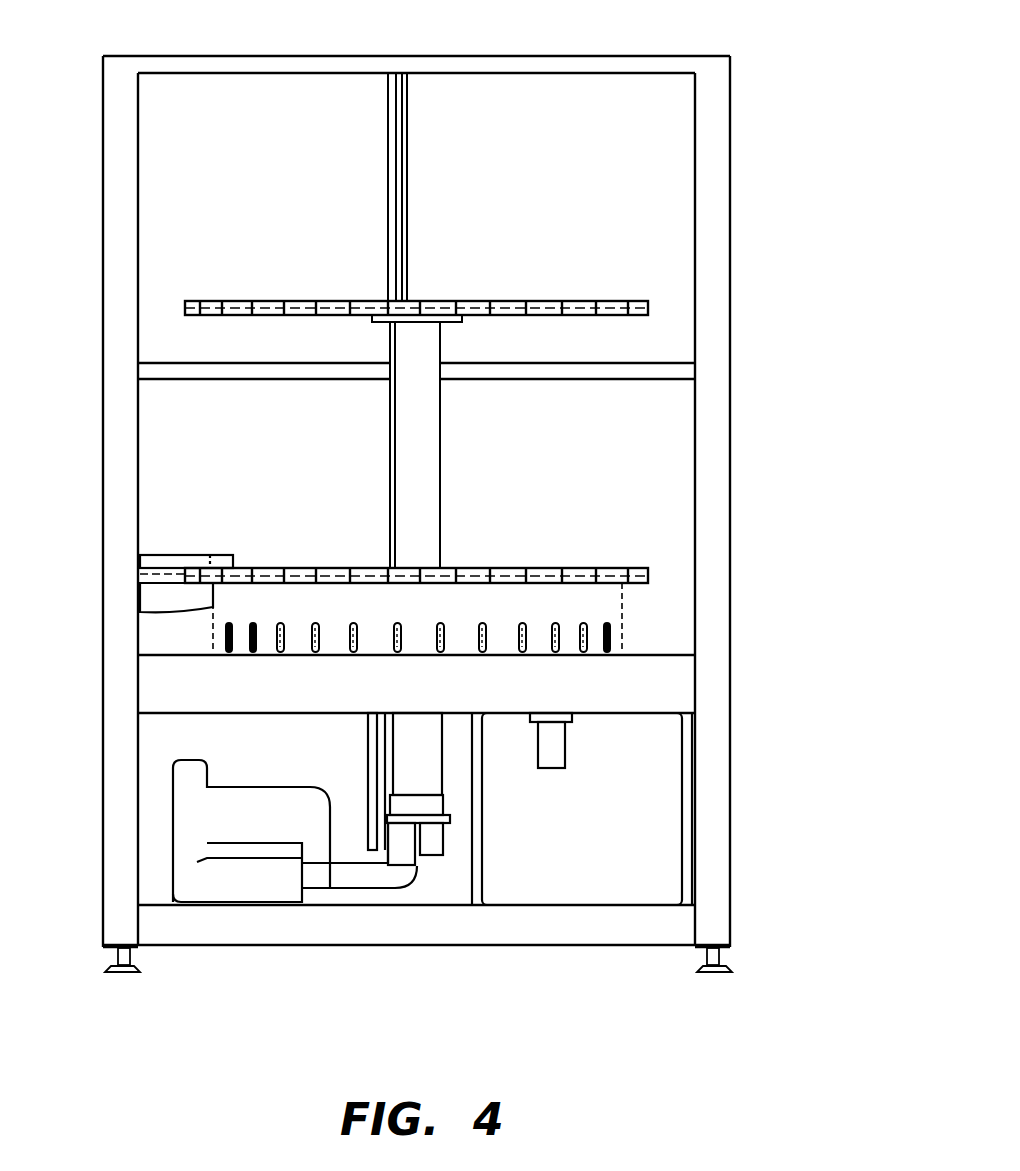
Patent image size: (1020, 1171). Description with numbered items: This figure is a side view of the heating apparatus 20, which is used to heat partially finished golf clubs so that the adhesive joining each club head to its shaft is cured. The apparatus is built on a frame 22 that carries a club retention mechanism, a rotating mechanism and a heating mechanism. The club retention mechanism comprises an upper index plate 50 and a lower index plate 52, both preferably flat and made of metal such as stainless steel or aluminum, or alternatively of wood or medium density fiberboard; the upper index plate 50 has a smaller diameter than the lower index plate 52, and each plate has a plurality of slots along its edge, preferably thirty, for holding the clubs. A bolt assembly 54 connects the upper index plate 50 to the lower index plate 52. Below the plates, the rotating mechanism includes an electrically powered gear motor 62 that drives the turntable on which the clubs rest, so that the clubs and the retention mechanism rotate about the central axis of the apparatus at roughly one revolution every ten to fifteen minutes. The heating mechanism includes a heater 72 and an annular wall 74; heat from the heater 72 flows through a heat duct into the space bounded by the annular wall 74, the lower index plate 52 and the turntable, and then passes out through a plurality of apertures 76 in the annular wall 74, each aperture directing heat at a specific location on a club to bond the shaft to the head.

The heating apparatus 20 is at (820, 184).
The frame 22 is at (633, 55).
The upper index plate 50 is at (513, 300).
The lower index plate 52 is at (590, 568).
The bolt assembly 54 is at (423, 445).
The gear motor 62 is at (553, 725).
The heater 72 is at (427, 776).
The annular wall 74 is at (213, 607).
The apertures 76 is at (623, 638).